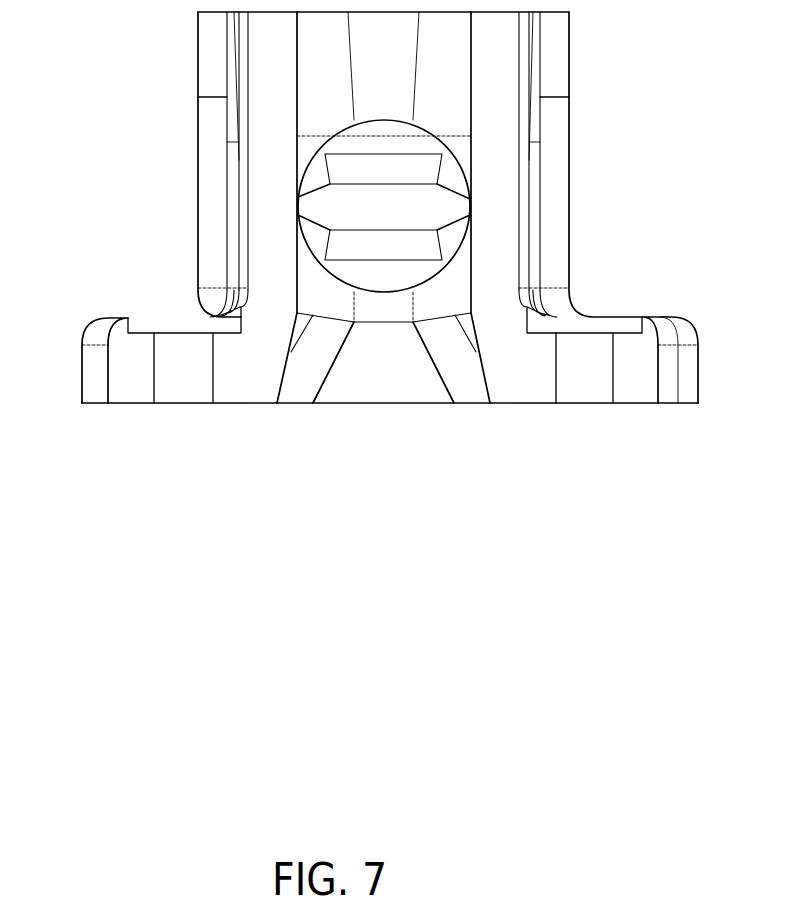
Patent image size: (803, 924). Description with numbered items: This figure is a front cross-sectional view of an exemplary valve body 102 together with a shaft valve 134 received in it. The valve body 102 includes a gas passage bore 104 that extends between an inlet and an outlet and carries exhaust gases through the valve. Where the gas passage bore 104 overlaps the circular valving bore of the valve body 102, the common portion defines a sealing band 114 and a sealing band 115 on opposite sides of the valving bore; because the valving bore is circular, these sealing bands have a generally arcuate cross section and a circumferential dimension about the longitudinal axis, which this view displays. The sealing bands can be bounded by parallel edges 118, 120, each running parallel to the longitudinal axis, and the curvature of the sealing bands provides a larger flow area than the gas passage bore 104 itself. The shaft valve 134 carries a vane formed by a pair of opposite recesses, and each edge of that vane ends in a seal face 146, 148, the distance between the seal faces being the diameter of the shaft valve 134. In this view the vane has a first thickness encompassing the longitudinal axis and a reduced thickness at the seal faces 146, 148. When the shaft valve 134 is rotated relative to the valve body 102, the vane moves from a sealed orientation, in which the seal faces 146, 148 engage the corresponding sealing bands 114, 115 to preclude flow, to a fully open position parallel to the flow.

The valve body 102 is at (250, 68).
The gas passage bore 104 is at (368, 53).
The sealing band 114 is at (296, 215).
The sealing band 115 is at (471, 215).
The parallel edge 118 is at (300, 180).
The parallel edge 120 is at (298, 233).
The shaft valve 134 is at (343, 187).
The seal face 146 is at (298, 203).
The seal face 148 is at (471, 200).